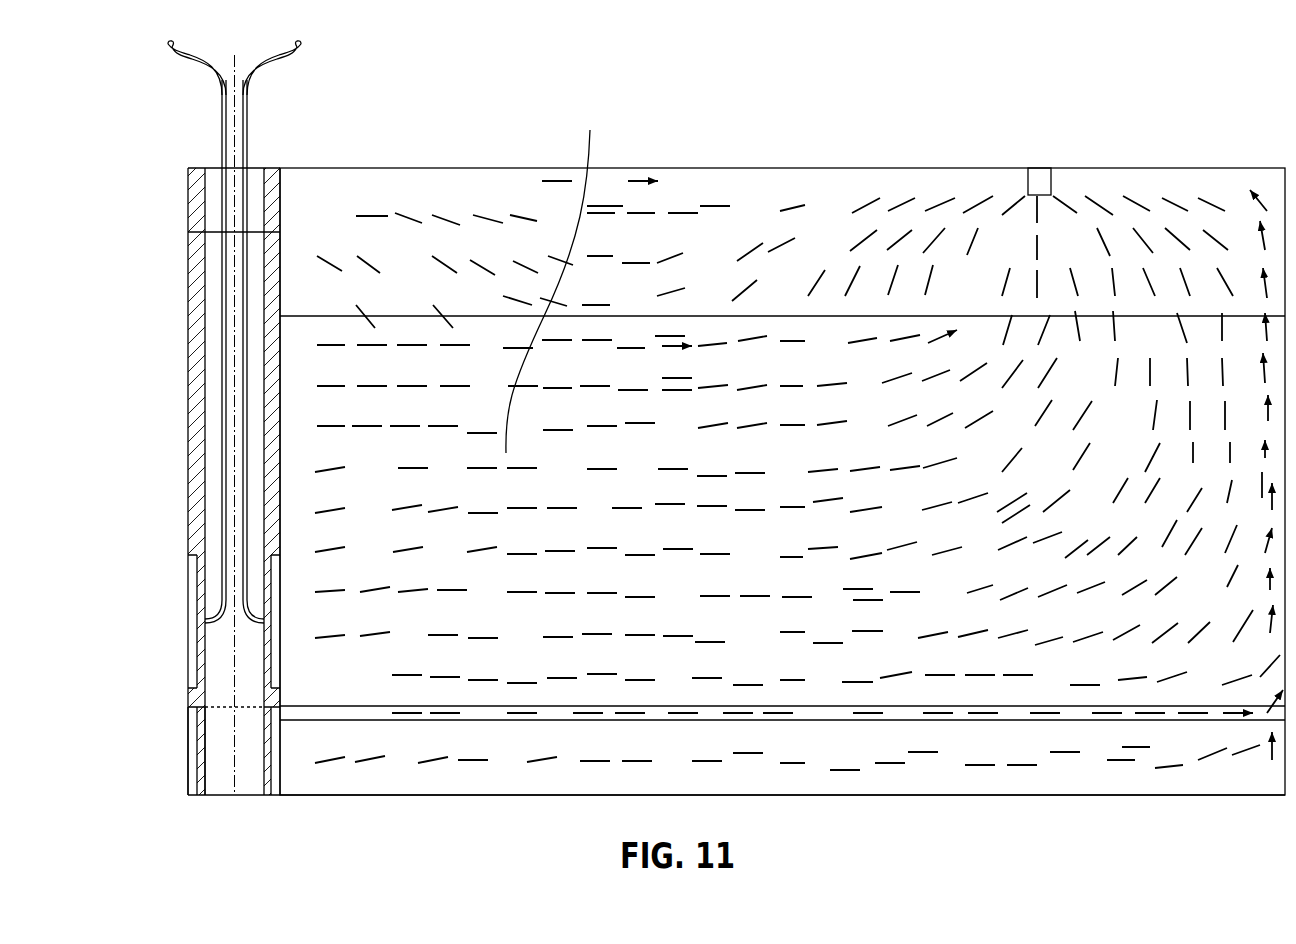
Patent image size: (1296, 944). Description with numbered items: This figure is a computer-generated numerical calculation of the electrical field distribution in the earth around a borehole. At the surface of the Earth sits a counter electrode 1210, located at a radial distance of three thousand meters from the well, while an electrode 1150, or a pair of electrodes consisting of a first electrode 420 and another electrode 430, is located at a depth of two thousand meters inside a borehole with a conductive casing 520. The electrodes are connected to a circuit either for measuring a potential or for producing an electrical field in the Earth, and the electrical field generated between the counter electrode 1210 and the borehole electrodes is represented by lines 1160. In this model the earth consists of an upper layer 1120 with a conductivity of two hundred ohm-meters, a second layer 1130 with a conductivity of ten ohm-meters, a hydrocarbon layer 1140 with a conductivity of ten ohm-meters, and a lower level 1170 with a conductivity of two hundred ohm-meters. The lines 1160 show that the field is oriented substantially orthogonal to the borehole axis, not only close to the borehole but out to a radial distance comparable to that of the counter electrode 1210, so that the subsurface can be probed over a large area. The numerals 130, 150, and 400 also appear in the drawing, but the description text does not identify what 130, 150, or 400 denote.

The housing / reaction chamber 130 is at (748, 168).
The inlet tube flared end 150 is at (222, 120).
The inlet assembly housing 400 is at (177, 657).
The first electrode 420 is at (187, 603).
The another electrode 430 is at (267, 596).
The conductive casing 520 is at (273, 167).
The upper layer 1120 is at (835, 185).
The second layer 1130 is at (557, 280).
The hydrocarbon layer 1140 is at (556, 706).
The electrode 1150 is at (182, 757).
The lines 1160 is at (977, 713).
The lower level 1170 is at (1162, 782).
The counter electrode 1210 is at (1040, 168).